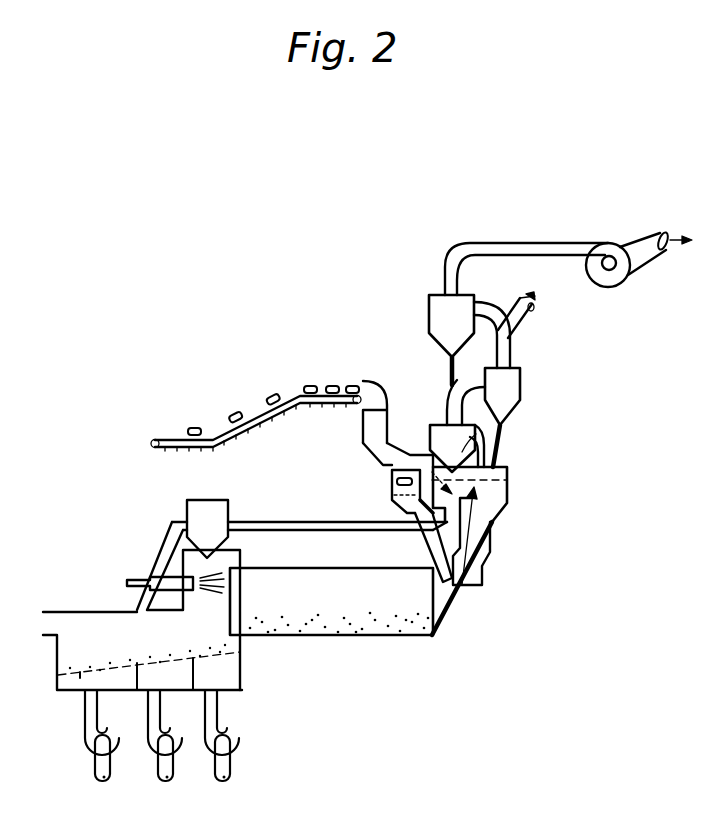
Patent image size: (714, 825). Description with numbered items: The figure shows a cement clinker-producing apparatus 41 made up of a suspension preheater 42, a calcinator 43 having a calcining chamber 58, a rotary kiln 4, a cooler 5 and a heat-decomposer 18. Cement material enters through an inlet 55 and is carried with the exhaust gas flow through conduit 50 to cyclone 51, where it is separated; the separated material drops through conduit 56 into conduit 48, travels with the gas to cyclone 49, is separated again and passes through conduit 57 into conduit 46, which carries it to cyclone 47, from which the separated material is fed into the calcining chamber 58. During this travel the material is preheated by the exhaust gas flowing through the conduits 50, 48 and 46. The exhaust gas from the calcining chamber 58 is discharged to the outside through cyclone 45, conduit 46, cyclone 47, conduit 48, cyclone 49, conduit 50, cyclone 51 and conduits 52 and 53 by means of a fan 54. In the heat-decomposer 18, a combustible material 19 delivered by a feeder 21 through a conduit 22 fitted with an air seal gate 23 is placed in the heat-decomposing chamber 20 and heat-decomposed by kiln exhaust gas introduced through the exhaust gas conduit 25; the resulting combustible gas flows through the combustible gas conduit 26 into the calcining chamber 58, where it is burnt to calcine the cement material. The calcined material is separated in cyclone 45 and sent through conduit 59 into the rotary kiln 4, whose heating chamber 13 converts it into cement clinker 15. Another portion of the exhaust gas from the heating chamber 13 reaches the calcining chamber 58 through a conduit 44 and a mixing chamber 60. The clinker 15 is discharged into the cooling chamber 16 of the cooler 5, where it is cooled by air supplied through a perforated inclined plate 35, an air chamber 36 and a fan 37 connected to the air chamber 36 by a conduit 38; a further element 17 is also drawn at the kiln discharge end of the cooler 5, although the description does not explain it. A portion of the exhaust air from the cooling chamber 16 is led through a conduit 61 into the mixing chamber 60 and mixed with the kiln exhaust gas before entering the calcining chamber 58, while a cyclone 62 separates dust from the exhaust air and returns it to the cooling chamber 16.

The rotary kiln 4 is at (330, 683).
The cooler 5 is at (84, 602).
The heating chamber 13 is at (377, 637).
The cement clinker 15 is at (270, 637).
The cooling chamber 16 is at (105, 620).
The burner 17 is at (143, 579).
The heat-decomposer 18 is at (390, 489).
The combustible material 19 is at (248, 408).
The heat-decomposing chamber 20 is at (392, 476).
The feeder 21 is at (253, 425).
The conduit 22 is at (357, 428).
The air seal gate 23 is at (380, 433).
The exhaust gas conduit 25 is at (427, 553).
The combustible gas conduit 26 is at (510, 483).
The inclined plate 35 is at (80, 675).
The air chamber 36 is at (148, 682).
The fan 37 is at (155, 747).
The conduit 38 is at (160, 713).
The apparatus 41 is at (272, 236).
The suspension preheater 42 is at (572, 382).
The calcinator 43 is at (497, 522).
The conduit 44 is at (472, 583).
The cyclone 45 is at (492, 513).
The conduit 46 is at (498, 458).
The cyclone 47 is at (460, 451).
The conduit 48 is at (470, 398).
The cyclone 49 is at (513, 403).
The conduit 50 is at (513, 345).
The cyclone 51 is at (440, 305).
The conduit 52 is at (532, 253).
The conduit 53 is at (651, 233).
The fan 54 is at (627, 277).
The inlet 55 is at (540, 312).
The conduit 56 is at (449, 365).
The conduit 57 is at (493, 440).
The calcining chamber 58 is at (480, 497).
The conduit 59 is at (458, 563).
The mixing chamber 60 is at (447, 526).
The conduit 61 is at (283, 522).
The cyclone 62 is at (193, 504).